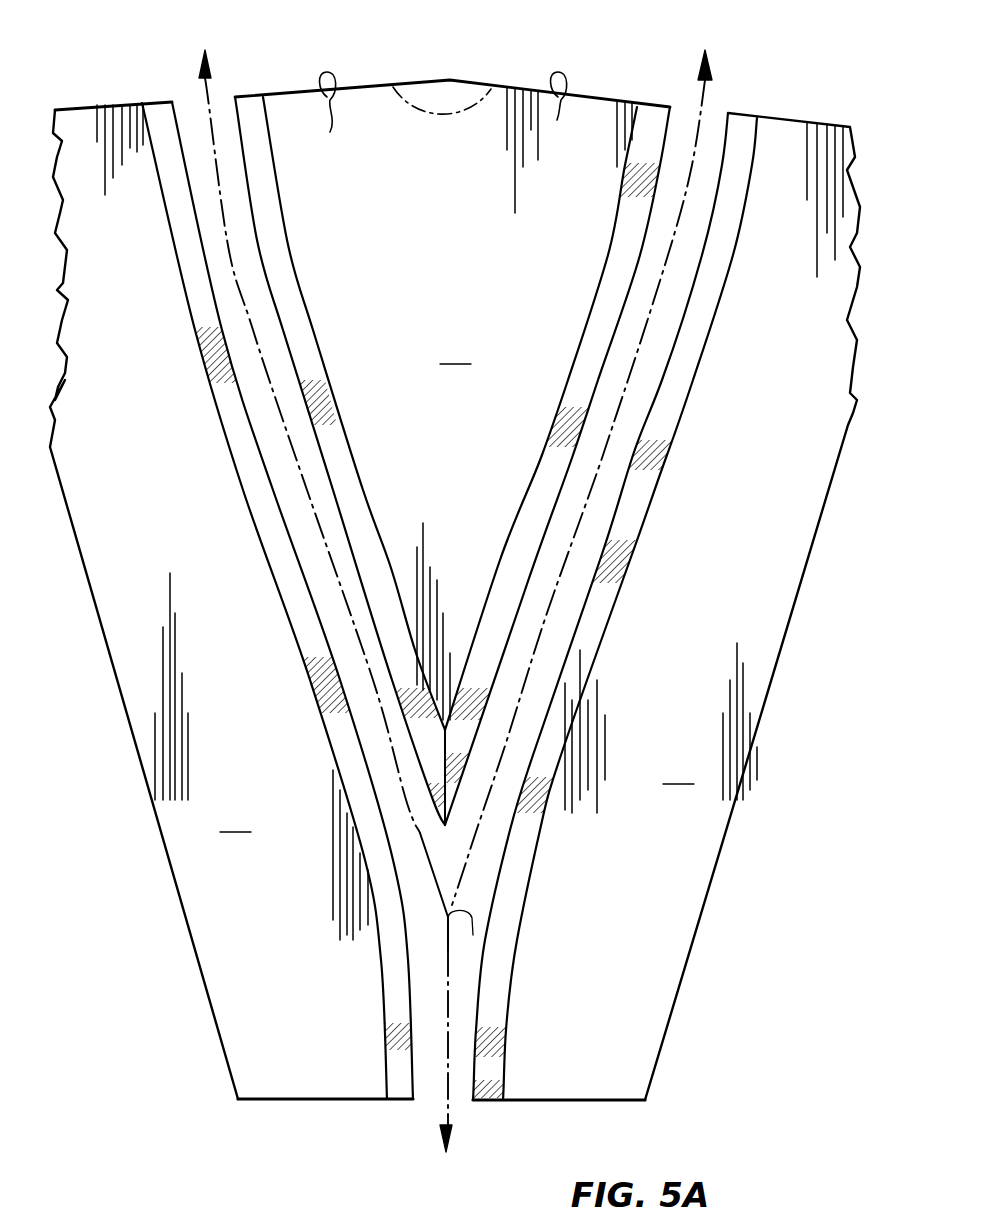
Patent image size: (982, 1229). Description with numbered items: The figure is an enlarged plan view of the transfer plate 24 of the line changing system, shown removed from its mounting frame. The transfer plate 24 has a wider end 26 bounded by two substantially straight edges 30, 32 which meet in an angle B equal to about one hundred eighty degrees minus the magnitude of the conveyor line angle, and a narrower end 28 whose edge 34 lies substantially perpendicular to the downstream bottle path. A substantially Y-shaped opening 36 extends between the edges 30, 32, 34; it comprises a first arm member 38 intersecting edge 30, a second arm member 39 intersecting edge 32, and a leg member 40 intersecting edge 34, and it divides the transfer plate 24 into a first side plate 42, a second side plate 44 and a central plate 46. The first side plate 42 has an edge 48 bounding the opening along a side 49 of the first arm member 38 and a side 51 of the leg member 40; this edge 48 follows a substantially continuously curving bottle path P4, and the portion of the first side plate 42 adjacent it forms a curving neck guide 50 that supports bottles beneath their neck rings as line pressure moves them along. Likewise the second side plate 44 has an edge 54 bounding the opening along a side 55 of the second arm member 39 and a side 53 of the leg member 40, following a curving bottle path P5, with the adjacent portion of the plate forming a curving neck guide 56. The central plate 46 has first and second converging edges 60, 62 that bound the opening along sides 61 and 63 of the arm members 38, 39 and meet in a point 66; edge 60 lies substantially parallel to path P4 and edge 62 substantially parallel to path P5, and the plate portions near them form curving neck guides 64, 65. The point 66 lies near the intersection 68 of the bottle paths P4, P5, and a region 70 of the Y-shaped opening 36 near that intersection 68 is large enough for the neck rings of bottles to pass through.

The transfer plate 24 is at (191, 975).
The wider end 26 is at (381, 112).
The narrower end 28 is at (291, 1100).
The edge 30 is at (565, 111).
The edge 32 is at (330, 117).
The edge 34 is at (590, 1100).
The Y-shaped opening 36 is at (537, 683).
The first arm member 38 is at (649, 378).
The second arm member 39 is at (244, 358).
The leg member 40 is at (470, 990).
The first side plate 42 is at (712, 606).
The second side plate 44 is at (211, 521).
The central plate 46 is at (524, 456).
The edge 48 is at (585, 600).
The side 49 is at (581, 458).
The curving neck guide 50 is at (697, 318).
The side 51 is at (478, 1068).
The side 53 is at (416, 1064).
The edge 54 is at (320, 634).
The side 55 is at (296, 572).
The curving neck guide 56 is at (268, 540).
The first converging edge 60 is at (553, 524).
The side 61 is at (584, 426).
The second converging edge 62 is at (326, 474).
The side 63 is at (310, 402).
The curving neck guide 64 is at (297, 327).
The curving neck guide 65 is at (600, 320).
The point 66 is at (446, 828).
The intersection 68 is at (475, 937).
The region 70 is at (450, 862).
The angle B is at (472, 113).
The curving bottle path P4 is at (630, 540).
The curving bottle path P5 is at (365, 712).